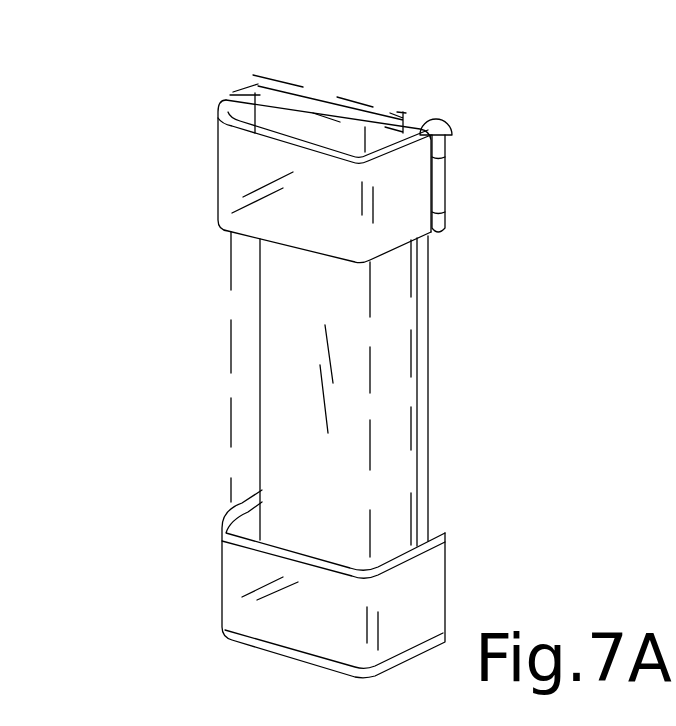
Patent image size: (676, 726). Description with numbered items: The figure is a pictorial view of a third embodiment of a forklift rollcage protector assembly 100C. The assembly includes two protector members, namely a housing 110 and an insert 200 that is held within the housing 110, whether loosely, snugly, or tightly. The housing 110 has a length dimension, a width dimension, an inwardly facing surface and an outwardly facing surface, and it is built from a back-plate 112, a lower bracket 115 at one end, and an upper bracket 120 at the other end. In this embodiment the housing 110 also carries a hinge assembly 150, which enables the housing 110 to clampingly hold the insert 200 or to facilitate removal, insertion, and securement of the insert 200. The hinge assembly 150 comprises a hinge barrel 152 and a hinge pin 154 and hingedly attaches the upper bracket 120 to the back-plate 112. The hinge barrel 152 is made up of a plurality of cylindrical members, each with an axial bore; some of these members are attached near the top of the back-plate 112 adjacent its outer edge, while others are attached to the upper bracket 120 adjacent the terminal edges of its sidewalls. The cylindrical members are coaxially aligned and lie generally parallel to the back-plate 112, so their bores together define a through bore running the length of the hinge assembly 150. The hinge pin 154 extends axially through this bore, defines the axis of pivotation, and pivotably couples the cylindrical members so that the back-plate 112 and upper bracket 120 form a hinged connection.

The rollcage protector assembly 100C is at (136, 105).
The housing 110 is at (448, 389).
The back-plate 112 is at (260, 390).
The lower bracket 115 is at (216, 583).
The upper bracket 120 is at (211, 188).
The hinge assembly 150 is at (467, 221).
The hinge barrel 152 is at (438, 175).
The hinge pin 154 is at (433, 117).
The insert 200 is at (227, 428).